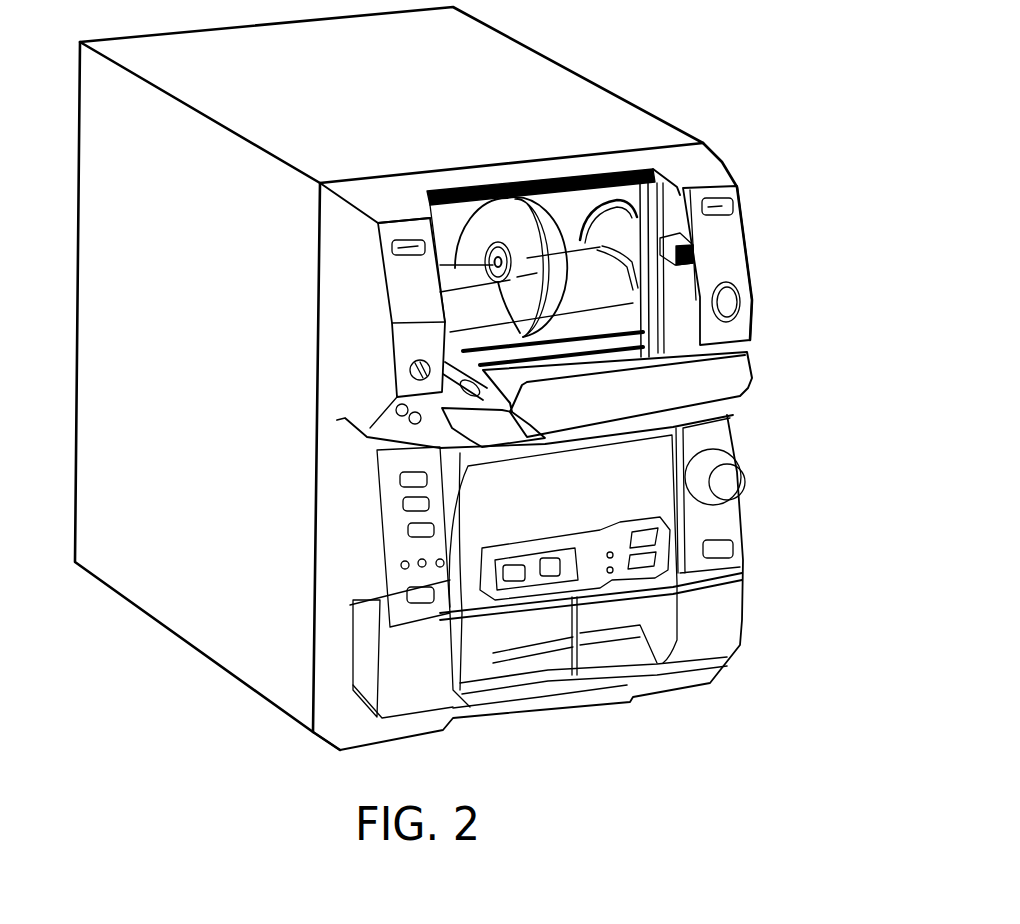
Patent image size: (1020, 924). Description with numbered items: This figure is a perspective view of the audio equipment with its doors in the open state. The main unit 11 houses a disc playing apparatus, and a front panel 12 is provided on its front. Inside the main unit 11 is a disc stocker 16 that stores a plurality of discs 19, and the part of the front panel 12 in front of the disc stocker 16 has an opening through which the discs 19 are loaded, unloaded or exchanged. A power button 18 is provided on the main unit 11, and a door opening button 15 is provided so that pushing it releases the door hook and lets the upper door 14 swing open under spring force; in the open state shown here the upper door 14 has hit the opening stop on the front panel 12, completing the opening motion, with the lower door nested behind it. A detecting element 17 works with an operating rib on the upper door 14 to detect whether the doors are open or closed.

The main unit 11 is at (95, 200).
The front panel 12 is at (723, 267).
The upper door 14 is at (730, 392).
The door opening button 15 is at (738, 200).
The disc stocker 16 is at (580, 270).
The detecting element 17 is at (692, 252).
The power button 18 is at (380, 252).
The disc 19 is at (527, 247).